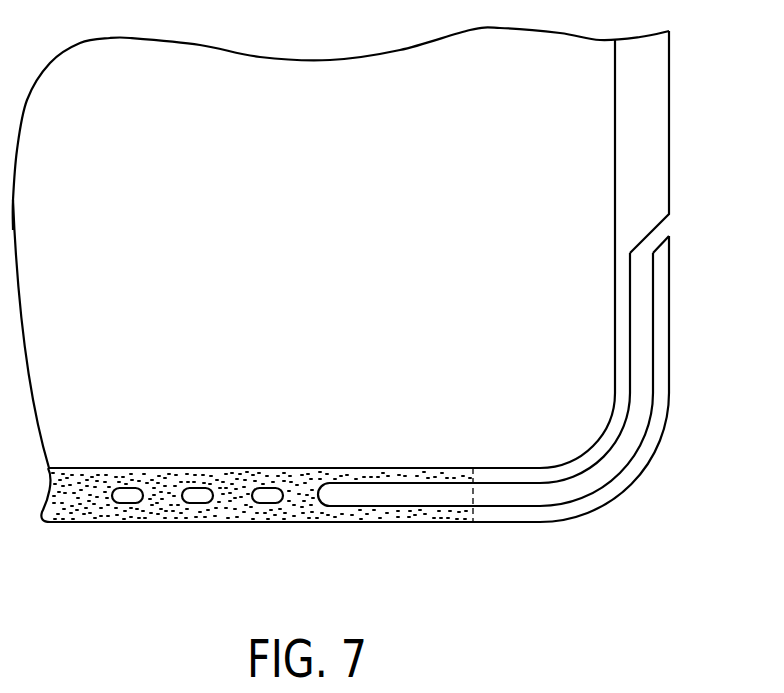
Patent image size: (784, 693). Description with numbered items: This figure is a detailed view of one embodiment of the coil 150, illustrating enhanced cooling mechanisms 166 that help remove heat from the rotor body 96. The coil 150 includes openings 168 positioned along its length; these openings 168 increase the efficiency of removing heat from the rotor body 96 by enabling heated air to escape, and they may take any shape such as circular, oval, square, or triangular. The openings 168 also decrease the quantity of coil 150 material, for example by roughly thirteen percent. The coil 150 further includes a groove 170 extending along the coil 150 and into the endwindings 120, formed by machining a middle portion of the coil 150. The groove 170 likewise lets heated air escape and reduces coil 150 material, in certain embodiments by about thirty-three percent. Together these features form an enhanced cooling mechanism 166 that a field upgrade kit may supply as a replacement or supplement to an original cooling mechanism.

The rotor body 96 is at (341, 135).
The coil 150 is at (630, 118).
The endwindings 120 is at (702, 212).
The groove 170 is at (644, 353).
The enhanced cooling mechanism 166 is at (284, 430).
The openings 168 is at (270, 502).